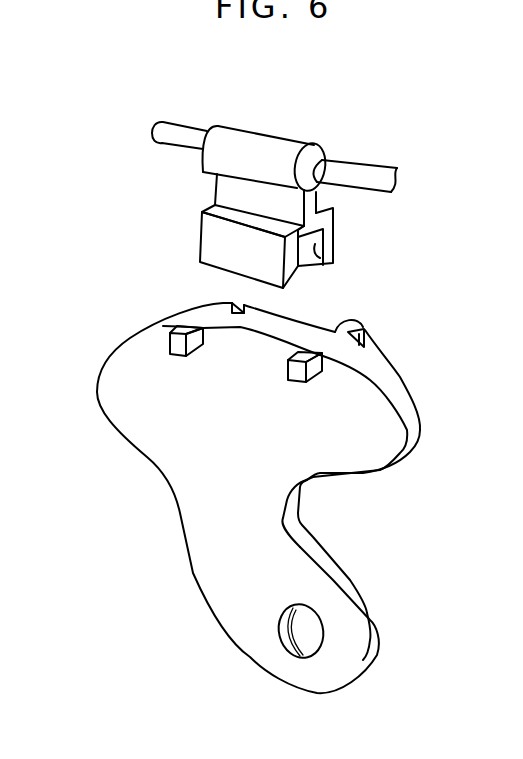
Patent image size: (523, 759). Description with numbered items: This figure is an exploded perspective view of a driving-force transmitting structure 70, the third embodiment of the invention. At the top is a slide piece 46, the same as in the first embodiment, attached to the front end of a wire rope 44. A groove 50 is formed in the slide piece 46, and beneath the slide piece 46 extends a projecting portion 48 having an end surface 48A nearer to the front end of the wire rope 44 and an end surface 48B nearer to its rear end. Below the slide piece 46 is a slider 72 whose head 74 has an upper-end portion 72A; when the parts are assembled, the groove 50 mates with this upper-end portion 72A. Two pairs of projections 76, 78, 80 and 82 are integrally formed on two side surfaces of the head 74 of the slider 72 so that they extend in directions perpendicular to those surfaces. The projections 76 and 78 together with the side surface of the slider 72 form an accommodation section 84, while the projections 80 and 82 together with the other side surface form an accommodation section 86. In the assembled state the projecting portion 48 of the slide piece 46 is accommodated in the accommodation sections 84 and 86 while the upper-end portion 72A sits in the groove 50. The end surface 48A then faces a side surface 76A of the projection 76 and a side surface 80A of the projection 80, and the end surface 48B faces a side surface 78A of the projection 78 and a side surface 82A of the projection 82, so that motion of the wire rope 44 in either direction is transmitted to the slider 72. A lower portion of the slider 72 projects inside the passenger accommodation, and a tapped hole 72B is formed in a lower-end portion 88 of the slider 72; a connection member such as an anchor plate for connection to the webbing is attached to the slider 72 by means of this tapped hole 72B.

The wire rope 44 is at (185, 126).
The slide piece 46 is at (267, 142).
The projecting portion 48 is at (332, 198).
The end surface 48A is at (202, 238).
The end surface 48B is at (330, 242).
The groove 50 is at (322, 268).
The driving-force transmitting structure 70 is at (113, 170).
The slider 72 is at (195, 550).
The upper-end portion 72A is at (322, 320).
The tapped hole 72B is at (298, 653).
The head 74 is at (88, 363).
The projection 76 is at (177, 356).
The side surface 76A is at (193, 350).
The projection 78 is at (300, 383).
The side surface 78A is at (288, 366).
The projection 80 is at (232, 303).
The side surface 80A is at (250, 308).
The projection 82 is at (364, 340).
The side surface 82A is at (372, 338).
The accommodation section 84 is at (253, 358).
The accommodation section 86 is at (368, 328).
The lower-end portion 88 is at (320, 527).